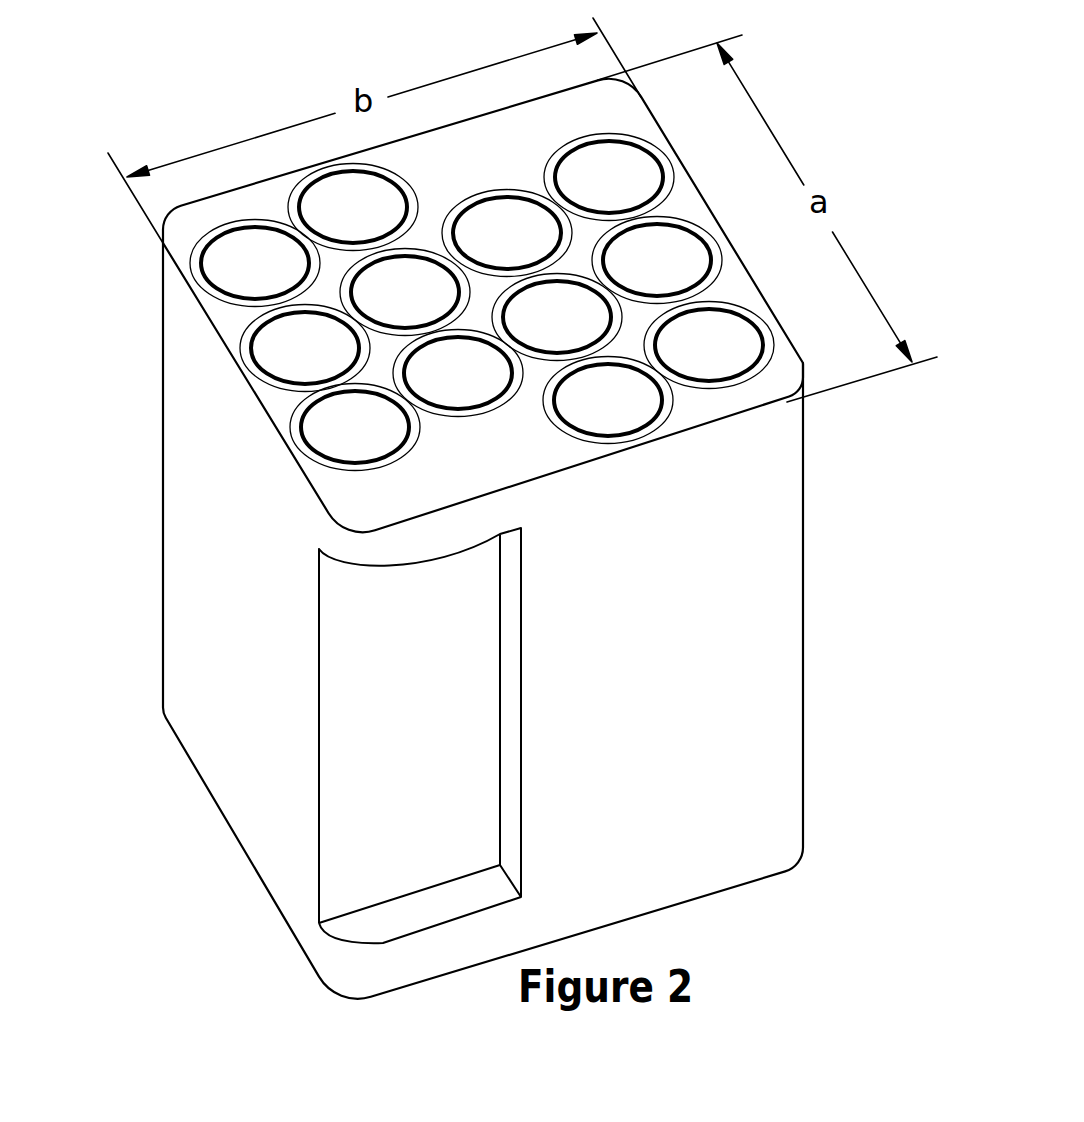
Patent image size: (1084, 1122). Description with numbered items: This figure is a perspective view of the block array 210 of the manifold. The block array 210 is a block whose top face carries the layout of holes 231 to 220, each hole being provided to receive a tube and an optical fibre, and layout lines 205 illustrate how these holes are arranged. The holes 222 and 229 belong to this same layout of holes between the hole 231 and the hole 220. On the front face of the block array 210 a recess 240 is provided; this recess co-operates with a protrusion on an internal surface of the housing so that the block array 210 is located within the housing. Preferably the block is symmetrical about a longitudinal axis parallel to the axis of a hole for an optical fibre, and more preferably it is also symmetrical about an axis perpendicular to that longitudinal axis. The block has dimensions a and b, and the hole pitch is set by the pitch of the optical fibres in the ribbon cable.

The layout lines 205 is at (328, 473).
The block array 210 is at (210, 330).
The hole 220 is at (653, 429).
The sleeve 222 is at (406, 446).
The bore 229 is at (673, 193).
The hole 231 is at (318, 172).
The recess 240 is at (432, 734).